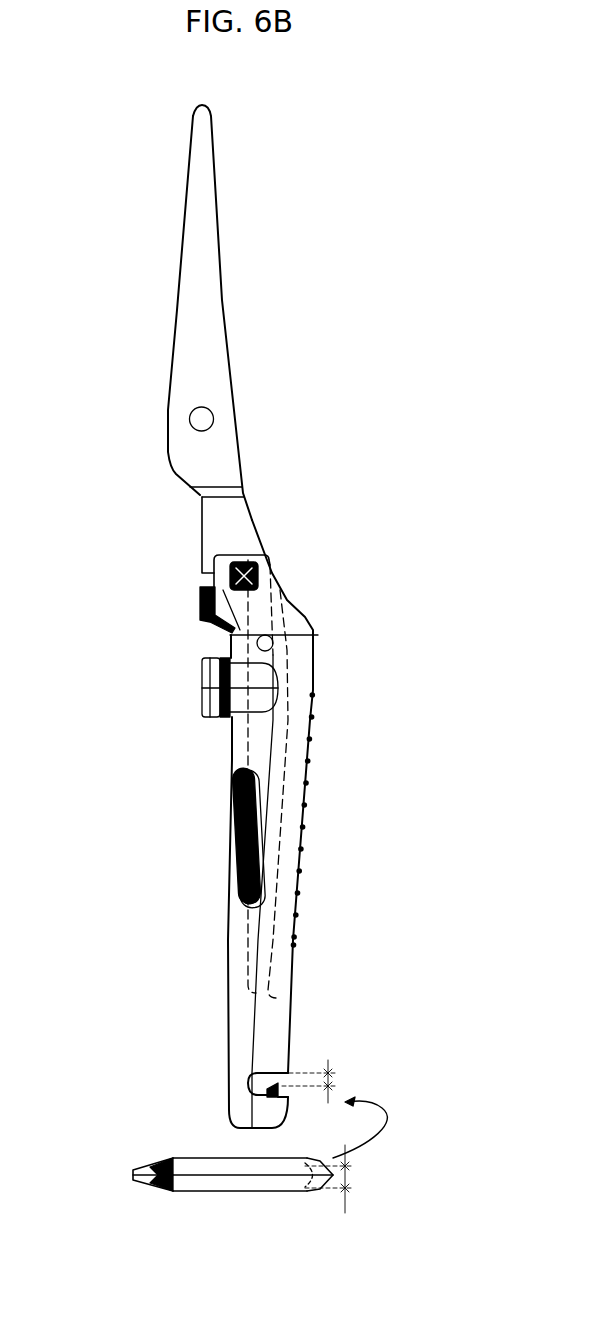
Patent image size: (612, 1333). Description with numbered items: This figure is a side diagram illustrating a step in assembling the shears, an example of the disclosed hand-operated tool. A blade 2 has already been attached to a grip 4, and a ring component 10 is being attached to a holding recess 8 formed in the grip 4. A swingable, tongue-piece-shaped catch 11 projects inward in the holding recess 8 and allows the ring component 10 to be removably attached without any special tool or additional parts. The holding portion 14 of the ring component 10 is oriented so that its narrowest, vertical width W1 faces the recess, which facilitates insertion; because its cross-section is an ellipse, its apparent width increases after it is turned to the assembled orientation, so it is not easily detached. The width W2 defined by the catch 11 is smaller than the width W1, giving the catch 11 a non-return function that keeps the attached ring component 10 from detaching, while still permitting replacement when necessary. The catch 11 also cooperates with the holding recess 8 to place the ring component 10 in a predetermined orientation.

The blade 2 is at (222, 298).
The grip 4 is at (307, 617).
The holding recess 8 is at (290, 1083).
The ring component 10 is at (248, 1192).
The catch 11 is at (268, 1093).
The holding portion 14 is at (315, 1178).
The narrowest width W1 is at (349, 1155).
The width defined by catch W2 is at (331, 1081).